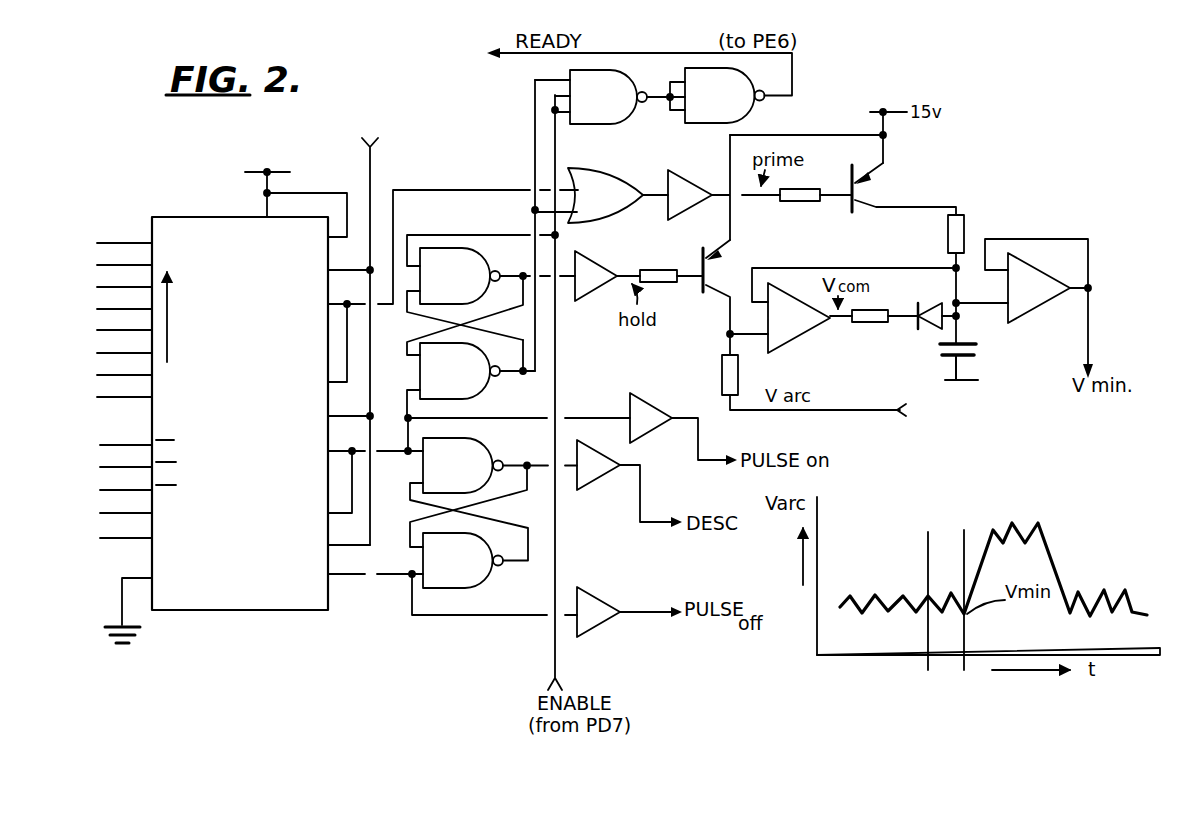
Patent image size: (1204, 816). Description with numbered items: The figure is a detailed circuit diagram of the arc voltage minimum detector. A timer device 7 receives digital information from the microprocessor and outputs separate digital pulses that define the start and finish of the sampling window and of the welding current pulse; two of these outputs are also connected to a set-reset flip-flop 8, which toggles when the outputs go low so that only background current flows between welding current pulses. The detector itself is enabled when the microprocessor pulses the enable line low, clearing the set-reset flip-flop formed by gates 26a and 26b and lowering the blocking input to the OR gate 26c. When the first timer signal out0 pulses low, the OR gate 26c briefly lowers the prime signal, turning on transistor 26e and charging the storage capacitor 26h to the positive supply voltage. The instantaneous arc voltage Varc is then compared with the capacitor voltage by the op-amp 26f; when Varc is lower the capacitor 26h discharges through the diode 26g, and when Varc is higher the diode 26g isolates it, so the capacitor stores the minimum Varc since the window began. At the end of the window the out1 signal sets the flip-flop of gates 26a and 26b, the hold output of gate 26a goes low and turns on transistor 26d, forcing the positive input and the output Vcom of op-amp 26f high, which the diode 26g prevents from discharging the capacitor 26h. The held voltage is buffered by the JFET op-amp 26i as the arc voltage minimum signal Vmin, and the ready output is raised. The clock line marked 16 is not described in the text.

The timer device 7 is at (240, 410).
The set-reset flip-flop 8 is at (495, 537).
The clock signal line 16 is at (370, 329).
The gate 26a is at (491, 295).
The gate 26b is at (477, 369).
The OR gate 26c is at (601, 195).
The transistor 26d is at (722, 262).
The transistor 26e is at (878, 187).
The op-amp 26f is at (818, 337).
The diode 26g is at (915, 339).
The storage capacitor 26h is at (989, 352).
The JFET op-amp 26i is at (1052, 258).